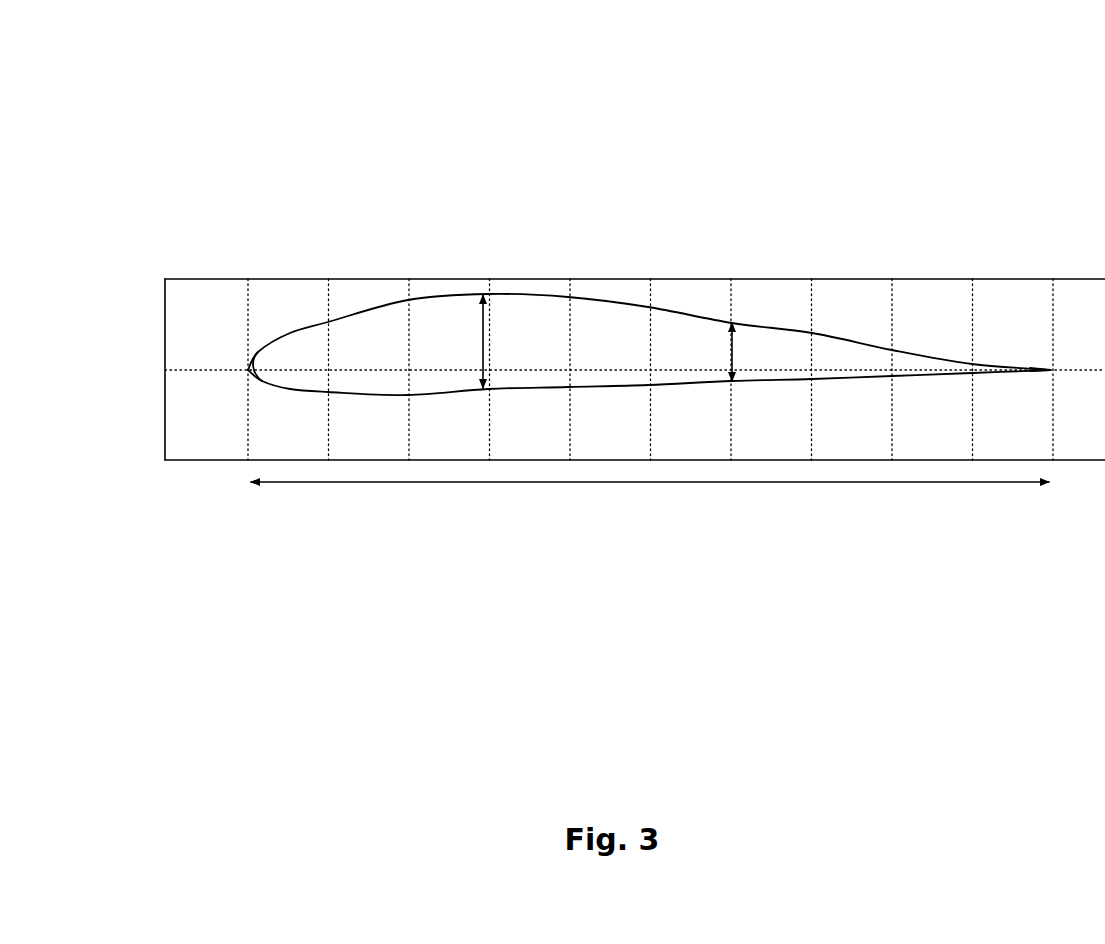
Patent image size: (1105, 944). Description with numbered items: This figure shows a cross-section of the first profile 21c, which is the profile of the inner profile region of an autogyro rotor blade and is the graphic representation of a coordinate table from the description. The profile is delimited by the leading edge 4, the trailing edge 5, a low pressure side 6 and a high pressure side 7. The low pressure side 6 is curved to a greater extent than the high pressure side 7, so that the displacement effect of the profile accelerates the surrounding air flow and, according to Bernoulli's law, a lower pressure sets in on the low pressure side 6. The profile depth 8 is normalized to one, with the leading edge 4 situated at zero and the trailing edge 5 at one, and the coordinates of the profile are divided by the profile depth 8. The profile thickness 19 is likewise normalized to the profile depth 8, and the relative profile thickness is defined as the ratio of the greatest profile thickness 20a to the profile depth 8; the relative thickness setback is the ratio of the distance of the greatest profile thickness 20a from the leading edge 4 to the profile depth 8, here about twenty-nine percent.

The first profile 21c is at (573, 326).
The leading edge 4 is at (248, 370).
The trailing edge 5 is at (1050, 370).
The low pressure side 6 is at (648, 295).
The high pressure side 7 is at (625, 399).
The profile depth 8 is at (467, 482).
The profile thickness 19 is at (734, 338).
The greatest profile thickness 20a is at (490, 325).